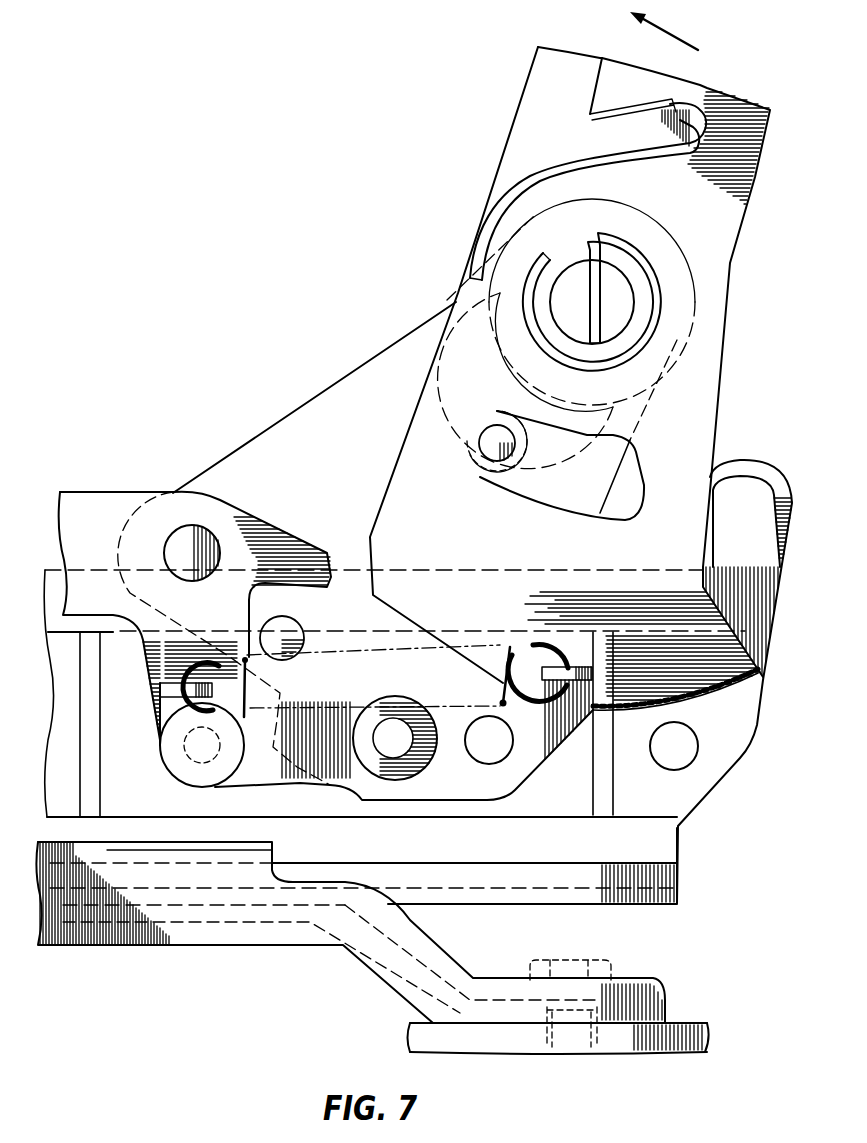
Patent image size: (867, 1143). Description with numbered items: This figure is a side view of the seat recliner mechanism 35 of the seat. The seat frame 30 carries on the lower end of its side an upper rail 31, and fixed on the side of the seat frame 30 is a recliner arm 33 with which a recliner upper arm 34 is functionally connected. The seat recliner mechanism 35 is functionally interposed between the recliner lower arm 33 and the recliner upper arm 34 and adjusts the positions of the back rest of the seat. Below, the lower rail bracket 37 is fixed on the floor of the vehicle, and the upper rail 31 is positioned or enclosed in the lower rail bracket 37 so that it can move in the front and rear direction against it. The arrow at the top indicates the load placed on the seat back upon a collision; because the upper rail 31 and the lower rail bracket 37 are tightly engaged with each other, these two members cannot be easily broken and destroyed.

The seat frame 30 is at (700, 846).
The upper rail 31 is at (649, 897).
The recliner arm 33 is at (693, 795).
The recliner upper arm 34 is at (525, 143).
The seat recliner mechanism 35 is at (220, 412).
The lower rail bracket 37 is at (277, 933).